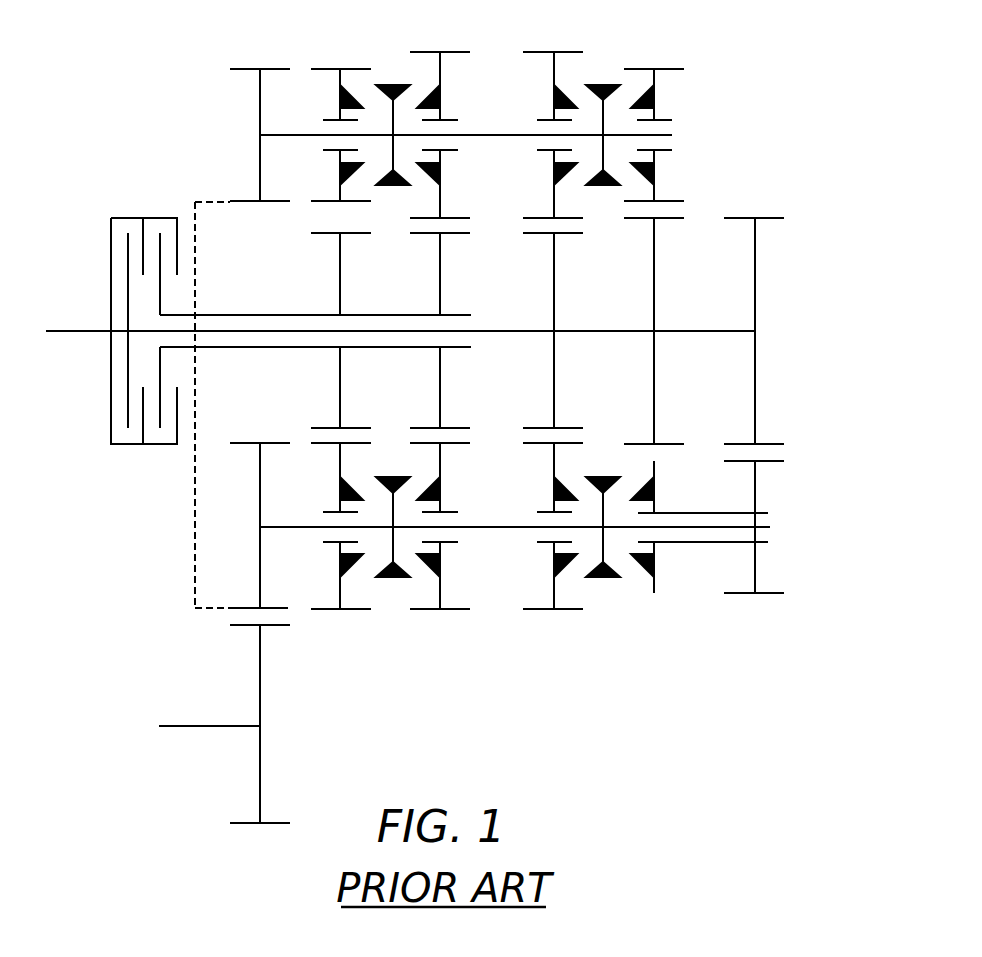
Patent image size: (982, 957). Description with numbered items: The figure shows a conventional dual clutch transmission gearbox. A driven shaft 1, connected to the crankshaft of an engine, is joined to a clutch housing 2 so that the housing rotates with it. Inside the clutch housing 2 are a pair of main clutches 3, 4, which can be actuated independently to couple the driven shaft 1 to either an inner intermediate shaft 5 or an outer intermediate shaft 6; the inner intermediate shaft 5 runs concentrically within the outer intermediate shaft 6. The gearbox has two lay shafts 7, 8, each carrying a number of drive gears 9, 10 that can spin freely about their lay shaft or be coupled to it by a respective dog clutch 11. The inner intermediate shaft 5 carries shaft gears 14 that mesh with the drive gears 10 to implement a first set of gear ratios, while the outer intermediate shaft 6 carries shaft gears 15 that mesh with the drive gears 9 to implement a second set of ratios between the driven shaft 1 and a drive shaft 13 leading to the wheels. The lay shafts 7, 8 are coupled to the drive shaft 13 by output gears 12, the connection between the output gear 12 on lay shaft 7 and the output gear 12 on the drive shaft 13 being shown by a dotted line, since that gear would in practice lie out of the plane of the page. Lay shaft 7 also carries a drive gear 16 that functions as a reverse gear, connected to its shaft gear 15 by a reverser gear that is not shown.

The driven shaft 1 is at (68, 335).
The clutch housing 2 is at (125, 447).
The main clutch 3 is at (128, 415).
The main clutch 4 is at (161, 415).
The inner intermediate shaft 5 is at (216, 313).
The outer intermediate shaft 6 is at (245, 350).
The lay shaft 7 is at (676, 135).
The lay shaft 8 is at (774, 527).
The drive gear 9 is at (451, 51).
The drive gear 10 is at (542, 51).
The dog clutch 11 is at (393, 84).
The output gear 12 is at (250, 68).
The drive shaft 13 is at (179, 724).
The shaft gear 14 is at (555, 272).
The shaft gear 15 is at (342, 272).
The drive gear 16 is at (330, 68).